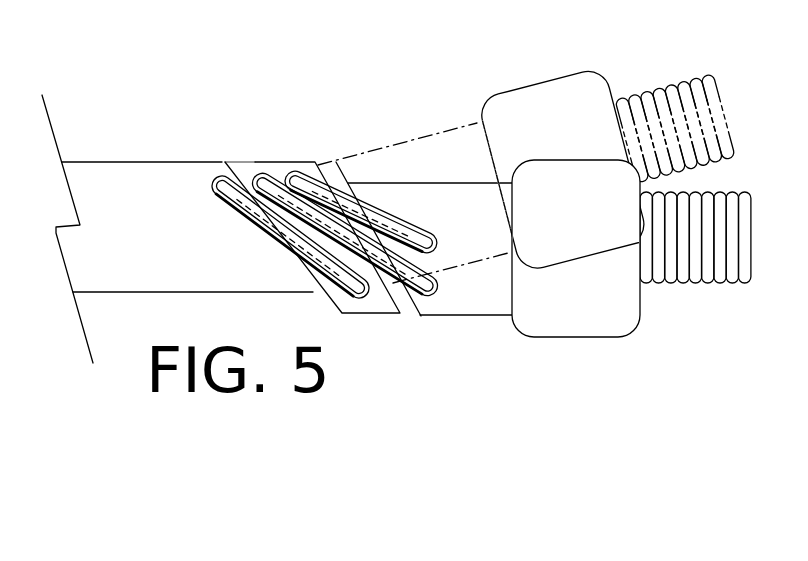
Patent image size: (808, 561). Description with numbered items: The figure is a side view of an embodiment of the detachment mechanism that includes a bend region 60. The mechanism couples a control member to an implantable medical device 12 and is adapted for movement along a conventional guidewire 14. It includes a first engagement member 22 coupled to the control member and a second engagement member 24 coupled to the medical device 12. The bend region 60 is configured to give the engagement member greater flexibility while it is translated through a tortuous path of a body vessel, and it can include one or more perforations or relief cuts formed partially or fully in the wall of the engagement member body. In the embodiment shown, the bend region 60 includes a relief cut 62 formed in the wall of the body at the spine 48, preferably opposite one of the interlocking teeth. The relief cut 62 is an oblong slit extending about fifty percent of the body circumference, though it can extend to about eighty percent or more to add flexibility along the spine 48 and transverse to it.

The implantable medical device 12 is at (548, 158).
The guidewire 14 is at (730, 188).
The first engagement member 22 is at (152, 177).
The second engagement member 24 is at (472, 296).
The spine 48 is at (285, 160).
The bend region 60 is at (229, 86).
The relief cut 62 is at (233, 162).